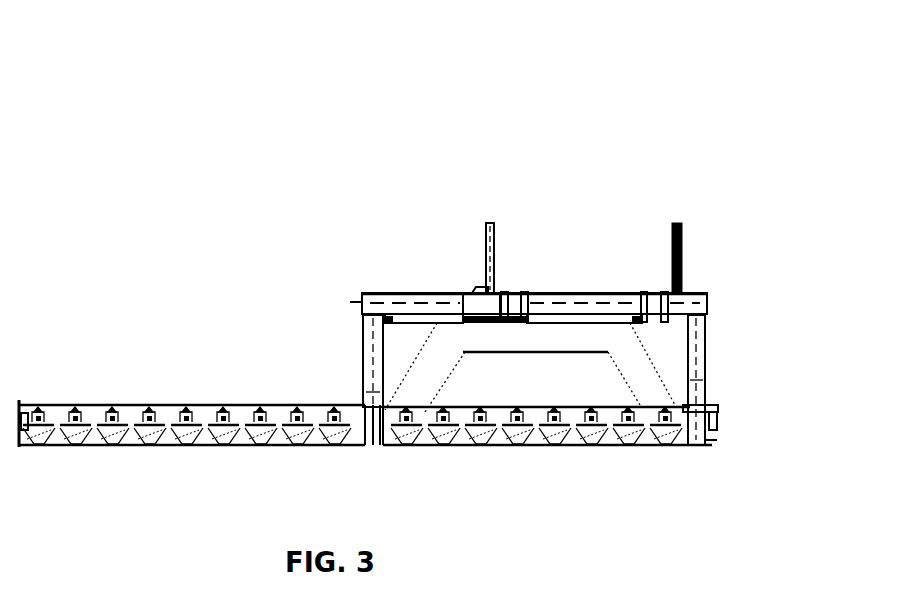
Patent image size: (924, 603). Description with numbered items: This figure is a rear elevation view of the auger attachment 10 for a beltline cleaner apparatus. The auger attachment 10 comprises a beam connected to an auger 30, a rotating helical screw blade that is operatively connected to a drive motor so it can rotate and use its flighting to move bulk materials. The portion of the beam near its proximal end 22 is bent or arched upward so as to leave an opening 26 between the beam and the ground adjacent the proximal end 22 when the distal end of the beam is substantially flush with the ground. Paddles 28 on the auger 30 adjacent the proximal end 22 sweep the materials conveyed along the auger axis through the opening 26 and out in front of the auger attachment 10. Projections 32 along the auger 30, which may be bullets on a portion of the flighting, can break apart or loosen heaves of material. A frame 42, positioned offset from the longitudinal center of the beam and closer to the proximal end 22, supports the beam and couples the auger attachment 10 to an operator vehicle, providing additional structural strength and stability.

The auger attachment 10 is at (313, 170).
The proximal end 22 is at (652, 397).
The opening 26 is at (530, 440).
The paddles 28 is at (490, 445).
The auger 30 is at (204, 406).
The projections 32 is at (108, 430).
The frame 42 is at (689, 300).